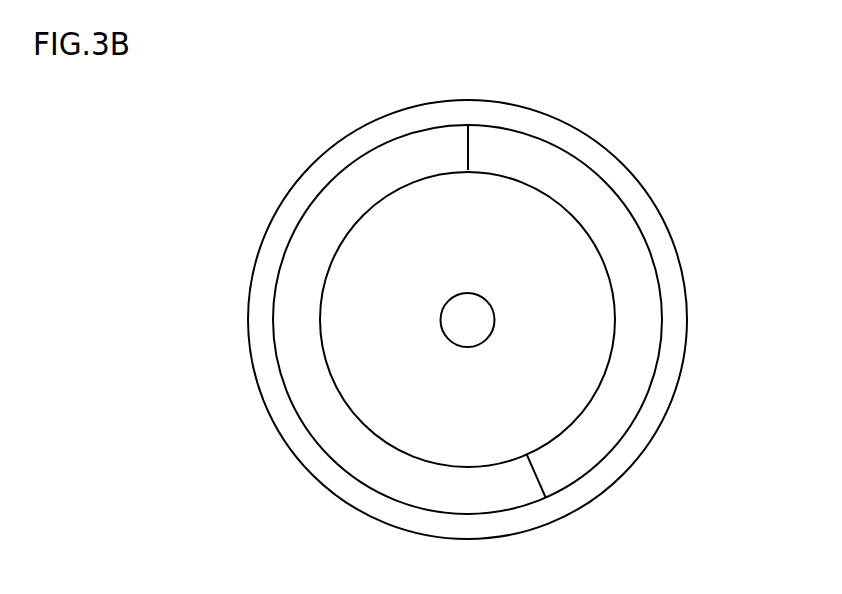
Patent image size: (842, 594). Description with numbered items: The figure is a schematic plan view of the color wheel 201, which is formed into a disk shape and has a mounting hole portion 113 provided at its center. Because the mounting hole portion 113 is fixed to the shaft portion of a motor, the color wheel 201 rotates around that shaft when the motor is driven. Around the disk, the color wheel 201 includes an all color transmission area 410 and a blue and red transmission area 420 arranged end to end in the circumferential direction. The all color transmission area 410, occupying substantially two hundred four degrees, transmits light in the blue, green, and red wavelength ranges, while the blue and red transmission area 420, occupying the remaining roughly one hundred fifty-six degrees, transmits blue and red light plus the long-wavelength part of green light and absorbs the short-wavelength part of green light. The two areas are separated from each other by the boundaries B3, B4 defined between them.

The color wheel 201 is at (594, 77).
The all color transmission area 410 is at (320, 177).
The blue and red transmission area 420 is at (666, 264).
The mounting hole portion 113 is at (486, 300).
The boundary B3 is at (468, 150).
The boundary B4 is at (536, 476).